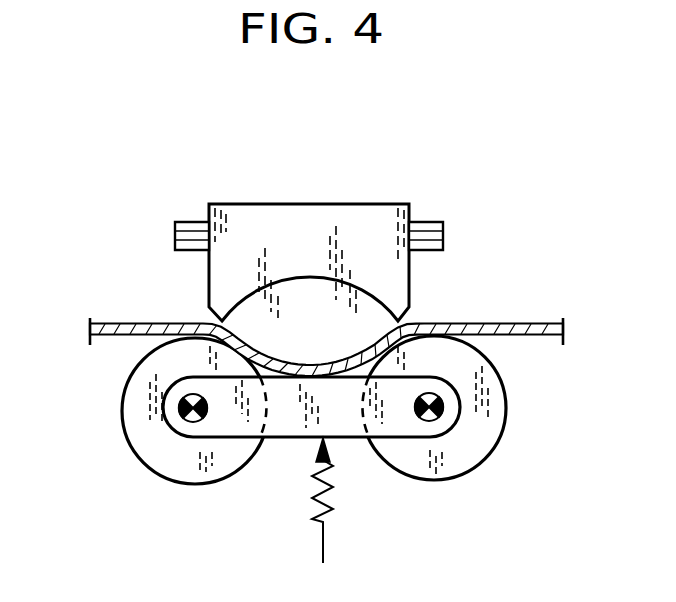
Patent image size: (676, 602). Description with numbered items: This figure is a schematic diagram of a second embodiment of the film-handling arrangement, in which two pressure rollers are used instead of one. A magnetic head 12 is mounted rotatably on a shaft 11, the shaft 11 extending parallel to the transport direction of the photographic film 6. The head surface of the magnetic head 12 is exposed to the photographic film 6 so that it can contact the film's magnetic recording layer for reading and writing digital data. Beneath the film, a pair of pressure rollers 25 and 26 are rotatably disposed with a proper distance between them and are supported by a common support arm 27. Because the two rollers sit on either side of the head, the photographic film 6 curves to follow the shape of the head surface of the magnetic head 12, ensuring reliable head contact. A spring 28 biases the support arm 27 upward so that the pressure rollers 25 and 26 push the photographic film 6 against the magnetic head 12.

The photographic film 6 is at (522, 321).
The shaft 11 is at (428, 220).
The magnetic head 12 is at (316, 228).
The pressure roller 25 is at (142, 462).
The pressure roller 26 is at (500, 443).
The support arm 27 is at (288, 438).
The spring 28 is at (337, 508).